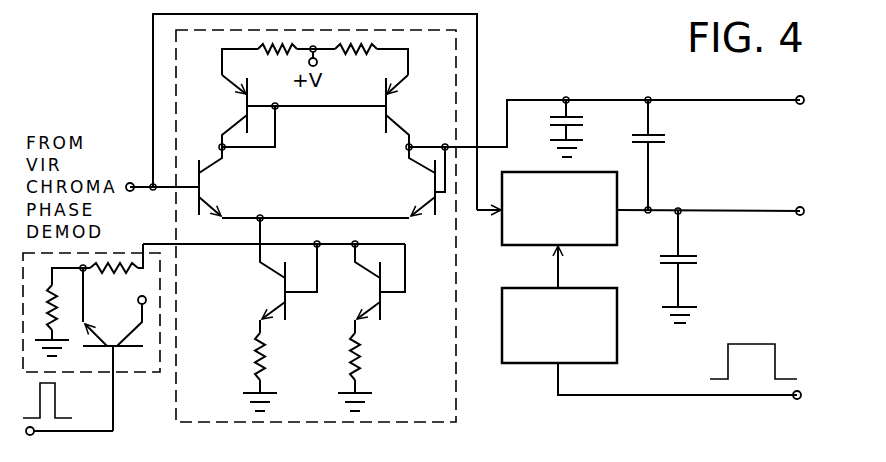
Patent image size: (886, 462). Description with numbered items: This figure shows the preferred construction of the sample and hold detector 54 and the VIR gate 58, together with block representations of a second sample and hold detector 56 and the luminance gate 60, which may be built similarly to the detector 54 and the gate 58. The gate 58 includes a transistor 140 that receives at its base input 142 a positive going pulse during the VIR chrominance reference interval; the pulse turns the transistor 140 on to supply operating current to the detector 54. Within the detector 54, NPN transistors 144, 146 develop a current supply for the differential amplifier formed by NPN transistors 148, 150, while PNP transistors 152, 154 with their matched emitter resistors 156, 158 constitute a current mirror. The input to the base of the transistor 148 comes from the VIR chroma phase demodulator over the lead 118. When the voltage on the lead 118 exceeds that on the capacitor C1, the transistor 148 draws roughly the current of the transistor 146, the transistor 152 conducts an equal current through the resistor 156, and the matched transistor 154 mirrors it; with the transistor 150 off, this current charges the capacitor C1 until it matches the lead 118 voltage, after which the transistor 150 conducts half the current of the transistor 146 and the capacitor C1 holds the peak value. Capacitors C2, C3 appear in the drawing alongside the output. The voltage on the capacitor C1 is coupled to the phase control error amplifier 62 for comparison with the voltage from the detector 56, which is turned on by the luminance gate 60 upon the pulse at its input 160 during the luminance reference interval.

The sample and hold detector 54 is at (456, 60).
The lead 118 is at (147, 184).
The NPN transistor 148 is at (220, 184).
The NPN transistor 150 is at (432, 190).
The PNP transistor 152 is at (244, 106).
The PNP transistor 154 is at (388, 106).
The emitter resistor 156 is at (274, 51).
The emitter resistor 158 is at (360, 53).
The NPN transistor 146 is at (282, 290).
The NPN transistor 144 is at (378, 292).
The transistor 140 is at (118, 349).
The VIR gate 58 is at (128, 374).
The base input 142 is at (35, 436).
The sample and hold detector 56 is at (530, 247).
The luminance gate 60 is at (528, 365).
The capacitor C1 is at (583, 117).
The capacitor C2 is at (693, 254).
The capacitor C3 is at (636, 143).
The phase control error amplifier 62 is at (749, 155).
The input 160 is at (790, 400).